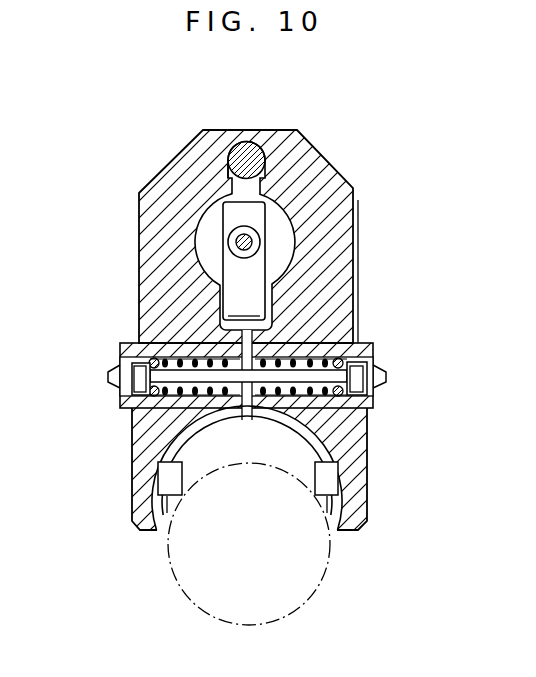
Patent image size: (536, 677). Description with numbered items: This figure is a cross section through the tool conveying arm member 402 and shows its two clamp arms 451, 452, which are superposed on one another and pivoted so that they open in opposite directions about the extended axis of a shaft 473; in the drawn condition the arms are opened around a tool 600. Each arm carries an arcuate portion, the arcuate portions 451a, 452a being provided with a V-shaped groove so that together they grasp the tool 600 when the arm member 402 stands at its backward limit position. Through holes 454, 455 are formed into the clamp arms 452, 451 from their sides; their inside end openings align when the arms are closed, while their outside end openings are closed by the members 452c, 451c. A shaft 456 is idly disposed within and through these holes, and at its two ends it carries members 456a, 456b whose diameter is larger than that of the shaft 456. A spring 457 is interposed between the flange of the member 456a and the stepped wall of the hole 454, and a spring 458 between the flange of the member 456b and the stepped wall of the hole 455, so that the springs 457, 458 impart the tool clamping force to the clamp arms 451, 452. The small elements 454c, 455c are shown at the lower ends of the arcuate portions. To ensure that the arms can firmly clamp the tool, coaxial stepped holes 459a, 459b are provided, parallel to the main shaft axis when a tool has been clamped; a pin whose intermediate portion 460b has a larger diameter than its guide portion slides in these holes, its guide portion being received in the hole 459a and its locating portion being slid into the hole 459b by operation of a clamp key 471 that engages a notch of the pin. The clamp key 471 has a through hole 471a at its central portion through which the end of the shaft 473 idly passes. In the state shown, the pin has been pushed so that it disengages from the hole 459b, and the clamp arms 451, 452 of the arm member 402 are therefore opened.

The tool conveying arm member 402 is at (242, 122).
The clamp arm 451 is at (358, 487).
The arcuate portion 451a is at (327, 510).
The closing member 451c is at (382, 368).
The clamp arm 452 is at (138, 488).
The arcuate portion 452a is at (172, 508).
The closing member 452c is at (117, 368).
The through hole 454 is at (190, 420).
The left ring end 454c is at (142, 412).
The through hole 455 is at (297, 420).
The right ring end 455c is at (365, 418).
The shaft 456 is at (247, 420).
The end member 456a is at (137, 380).
The end member 456b is at (358, 380).
The spring 457 is at (172, 352).
The spring 458 is at (348, 338).
The stepped hole 459a is at (264, 158).
The stepped hole 459b is at (221, 158).
The intermediate portion 460b is at (248, 147).
The clamp key 471 is at (253, 213).
The through hole 471a is at (242, 236).
The shaft 473 is at (257, 247).
The tool 600 is at (327, 562).